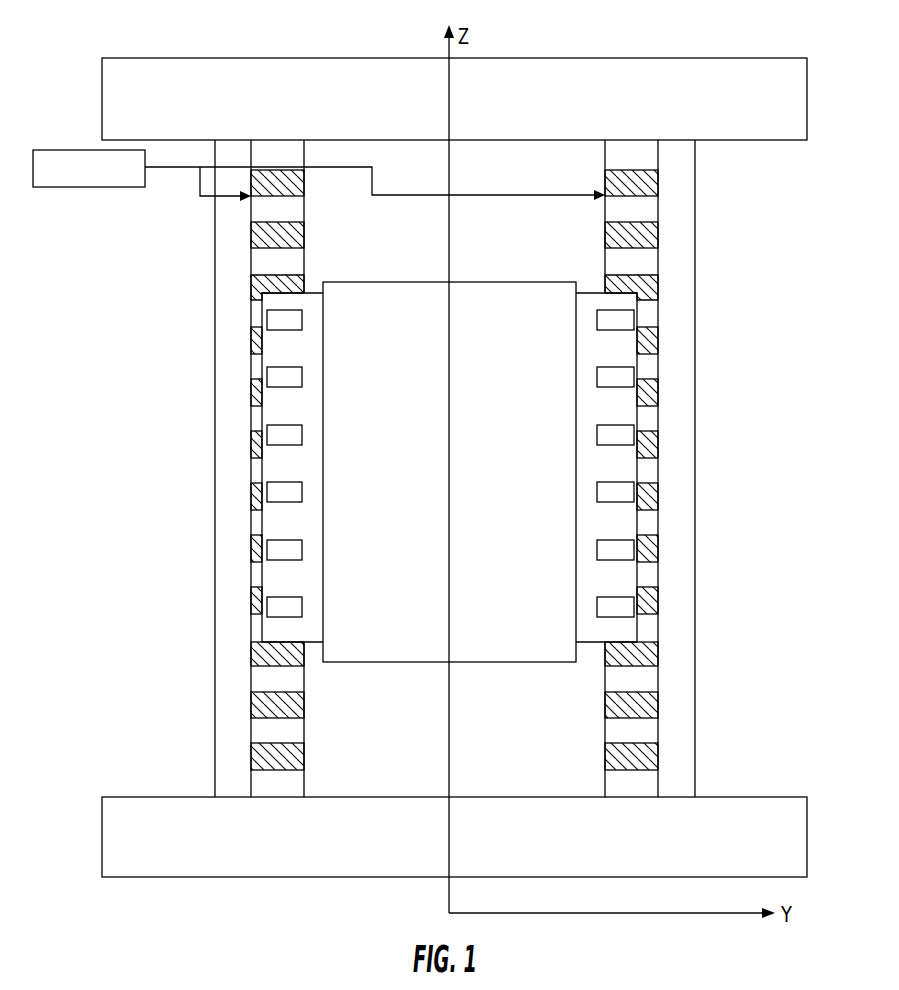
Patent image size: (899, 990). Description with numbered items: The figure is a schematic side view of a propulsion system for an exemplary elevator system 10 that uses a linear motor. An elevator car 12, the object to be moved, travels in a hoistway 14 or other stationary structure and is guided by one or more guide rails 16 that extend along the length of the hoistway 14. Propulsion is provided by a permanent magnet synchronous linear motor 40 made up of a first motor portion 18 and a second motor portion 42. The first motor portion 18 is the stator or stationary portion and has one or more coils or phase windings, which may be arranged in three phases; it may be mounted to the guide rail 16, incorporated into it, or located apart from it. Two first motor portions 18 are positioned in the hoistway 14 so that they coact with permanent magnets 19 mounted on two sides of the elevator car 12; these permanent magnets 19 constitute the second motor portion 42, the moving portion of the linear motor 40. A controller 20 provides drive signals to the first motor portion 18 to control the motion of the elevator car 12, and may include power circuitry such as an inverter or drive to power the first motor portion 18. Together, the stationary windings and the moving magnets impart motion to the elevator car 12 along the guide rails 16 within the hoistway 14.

The elevator system 10 is at (752, 198).
The elevator car 12 is at (426, 481).
The hoistway 14 is at (695, 340).
The guide rail 16 is at (304, 148).
The first motor portion 18 is at (293, 231).
The permanent magnets 19 is at (278, 320).
The controller 20 is at (74, 188).
The permanent magnet synchronous linear motor 40 is at (229, 653).
The second motor portion 42 is at (287, 330).